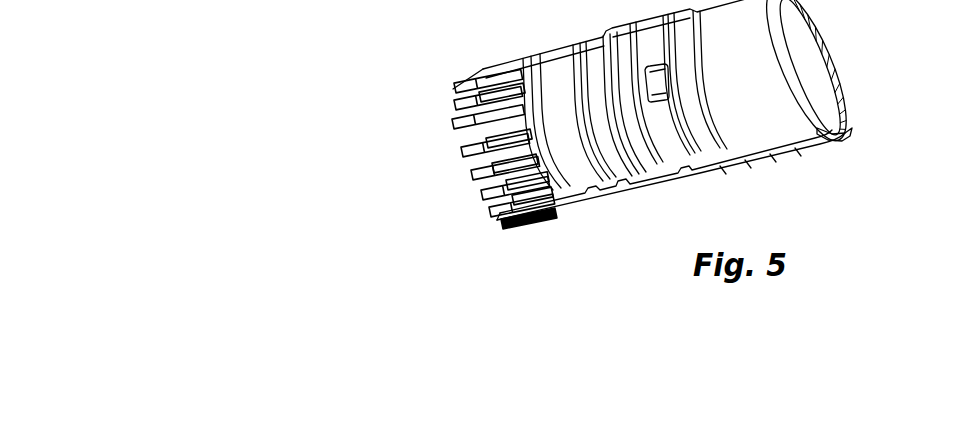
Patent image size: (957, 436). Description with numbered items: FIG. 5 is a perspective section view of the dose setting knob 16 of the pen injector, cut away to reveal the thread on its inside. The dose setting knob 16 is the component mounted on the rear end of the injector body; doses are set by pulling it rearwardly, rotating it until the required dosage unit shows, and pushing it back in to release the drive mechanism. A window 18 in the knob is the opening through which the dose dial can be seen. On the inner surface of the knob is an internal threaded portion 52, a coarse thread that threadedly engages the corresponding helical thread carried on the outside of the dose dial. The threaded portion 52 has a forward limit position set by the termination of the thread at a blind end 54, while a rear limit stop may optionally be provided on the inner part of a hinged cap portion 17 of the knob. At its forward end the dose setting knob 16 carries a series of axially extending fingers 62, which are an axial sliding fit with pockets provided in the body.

The dose setting knob 16 is at (773, 160).
The hinged cap portion 17 is at (825, 42).
The window 18 is at (668, 82).
The internal threaded portion 52 is at (607, 143).
The blind end 54 is at (483, 123).
The axially extending fingers 62 is at (490, 213).